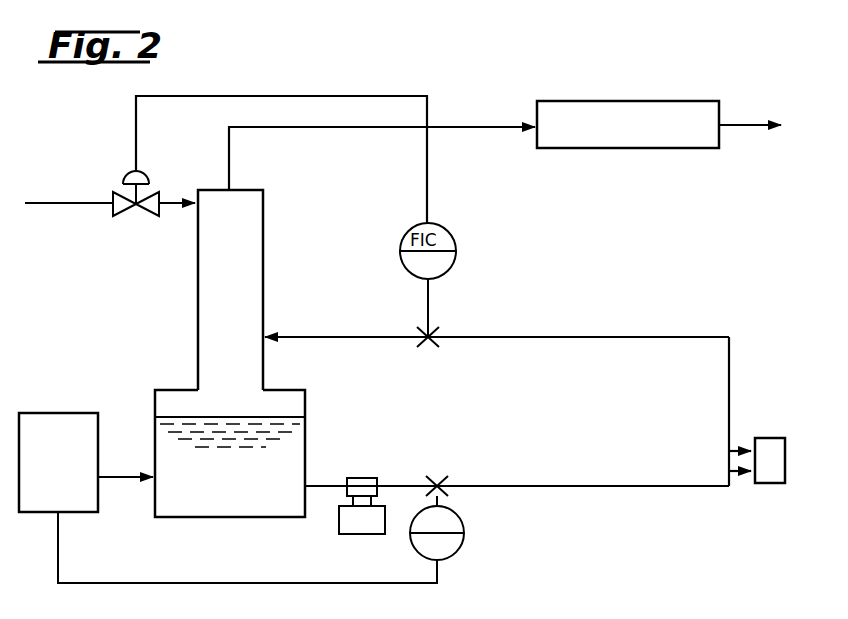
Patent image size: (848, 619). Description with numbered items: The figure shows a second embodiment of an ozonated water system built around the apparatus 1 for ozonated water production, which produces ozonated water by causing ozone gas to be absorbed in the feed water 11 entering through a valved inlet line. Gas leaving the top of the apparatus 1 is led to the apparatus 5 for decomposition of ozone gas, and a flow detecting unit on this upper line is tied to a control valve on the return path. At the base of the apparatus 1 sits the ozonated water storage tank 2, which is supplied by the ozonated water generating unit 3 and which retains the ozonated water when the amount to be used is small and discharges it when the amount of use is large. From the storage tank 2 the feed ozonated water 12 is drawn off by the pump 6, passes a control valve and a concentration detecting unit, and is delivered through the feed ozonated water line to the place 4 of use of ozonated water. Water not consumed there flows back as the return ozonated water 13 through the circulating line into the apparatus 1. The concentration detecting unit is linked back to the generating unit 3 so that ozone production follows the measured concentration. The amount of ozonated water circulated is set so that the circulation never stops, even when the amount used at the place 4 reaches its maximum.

The apparatus for ozonated water production 1 is at (240, 310).
The ozonated water storage tank 2 is at (242, 486).
The ozonated water generating unit 3 is at (68, 475).
The place of use of ozonated water 4 is at (770, 443).
The apparatus for decomposition of ozone gas 5 is at (639, 139).
The pump 6 is at (362, 488).
The feed water 11 is at (70, 203).
The feed ozonated water 12 is at (563, 486).
The return ozonated water 13 is at (590, 337).